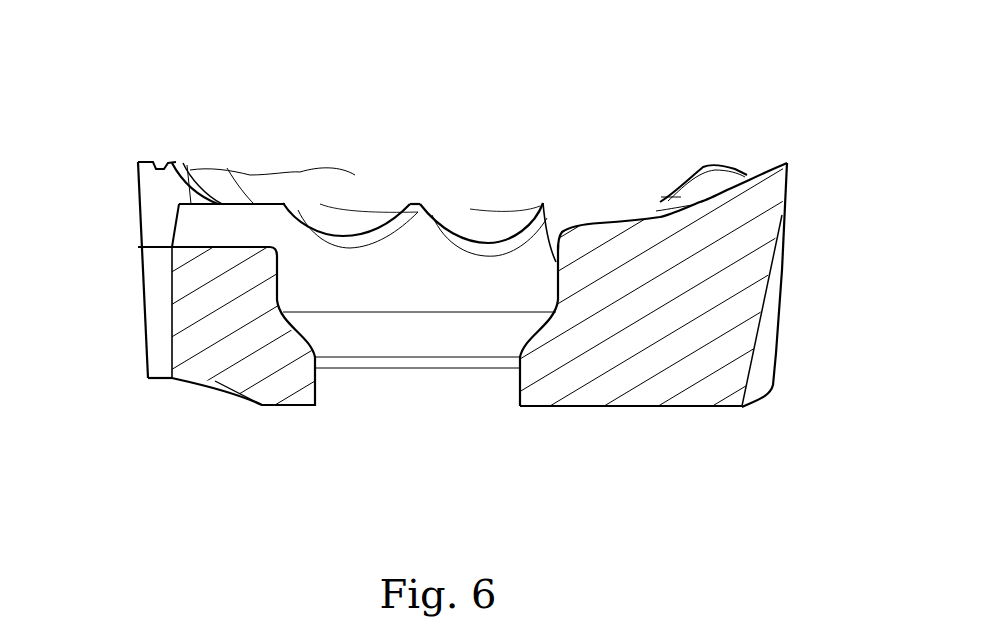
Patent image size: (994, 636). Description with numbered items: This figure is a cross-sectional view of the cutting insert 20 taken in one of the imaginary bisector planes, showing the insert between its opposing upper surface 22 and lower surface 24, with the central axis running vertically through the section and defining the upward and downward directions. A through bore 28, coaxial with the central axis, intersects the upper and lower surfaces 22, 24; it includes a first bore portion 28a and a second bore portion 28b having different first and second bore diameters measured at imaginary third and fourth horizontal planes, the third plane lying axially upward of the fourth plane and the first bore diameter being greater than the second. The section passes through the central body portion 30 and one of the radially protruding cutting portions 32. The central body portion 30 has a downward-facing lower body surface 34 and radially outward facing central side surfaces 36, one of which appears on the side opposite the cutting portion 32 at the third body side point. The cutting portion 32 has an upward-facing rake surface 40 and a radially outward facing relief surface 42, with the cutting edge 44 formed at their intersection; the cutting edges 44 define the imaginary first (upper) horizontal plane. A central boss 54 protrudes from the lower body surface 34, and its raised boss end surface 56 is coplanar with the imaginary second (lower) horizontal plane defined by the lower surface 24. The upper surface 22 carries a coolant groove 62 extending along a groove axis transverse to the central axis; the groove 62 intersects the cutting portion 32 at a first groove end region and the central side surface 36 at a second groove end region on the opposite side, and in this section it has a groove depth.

The cutting insert 20 is at (475, 288).
The upper surface 22 is at (432, 133).
The lower surface 24 is at (475, 288).
The through bore 28 is at (423, 292).
The first bore portion 28a is at (546, 204).
The second bore portion 28b is at (324, 406).
The central body portion 30 is at (396, 185).
The cutting portion 32 is at (353, 175).
The lower body surface 34 is at (554, 418).
The central side surface 36 is at (171, 320).
The rake surface 40 is at (758, 166).
The relief surface 42 is at (787, 225).
The cutting edge 44 is at (788, 163).
The central boss 54 is at (281, 398).
The raised boss end surface 56 is at (300, 407).
The coolant groove 62 is at (346, 219).